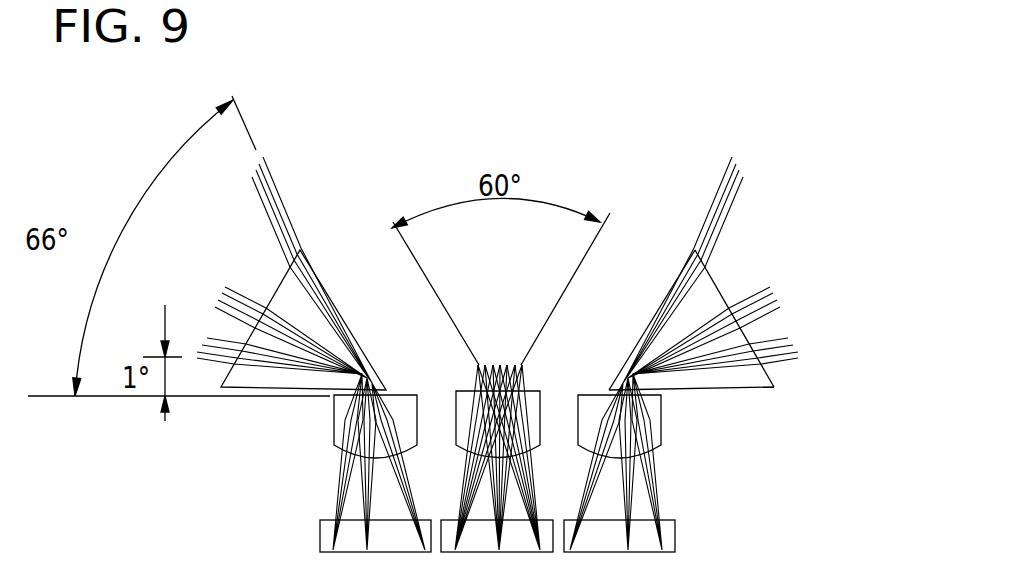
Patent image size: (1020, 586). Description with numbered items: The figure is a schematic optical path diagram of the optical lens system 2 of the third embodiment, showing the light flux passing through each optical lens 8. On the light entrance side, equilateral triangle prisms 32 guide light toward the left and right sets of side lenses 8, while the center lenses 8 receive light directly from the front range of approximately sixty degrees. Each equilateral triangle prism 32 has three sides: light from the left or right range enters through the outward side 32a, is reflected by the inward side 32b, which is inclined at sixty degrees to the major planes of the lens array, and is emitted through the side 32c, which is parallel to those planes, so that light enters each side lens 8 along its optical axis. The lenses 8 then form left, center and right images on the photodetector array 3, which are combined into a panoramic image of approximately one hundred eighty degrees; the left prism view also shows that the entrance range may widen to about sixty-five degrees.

The optical lens system 2 is at (793, 151).
The photodetector array 3 is at (667, 535).
The optical lens 8 is at (463, 402).
The equilateral triangle prism 32 is at (287, 295).
The outward side 32a is at (749, 336).
The inward side 32b is at (659, 297).
The side parallel to lens array 32c is at (740, 390).